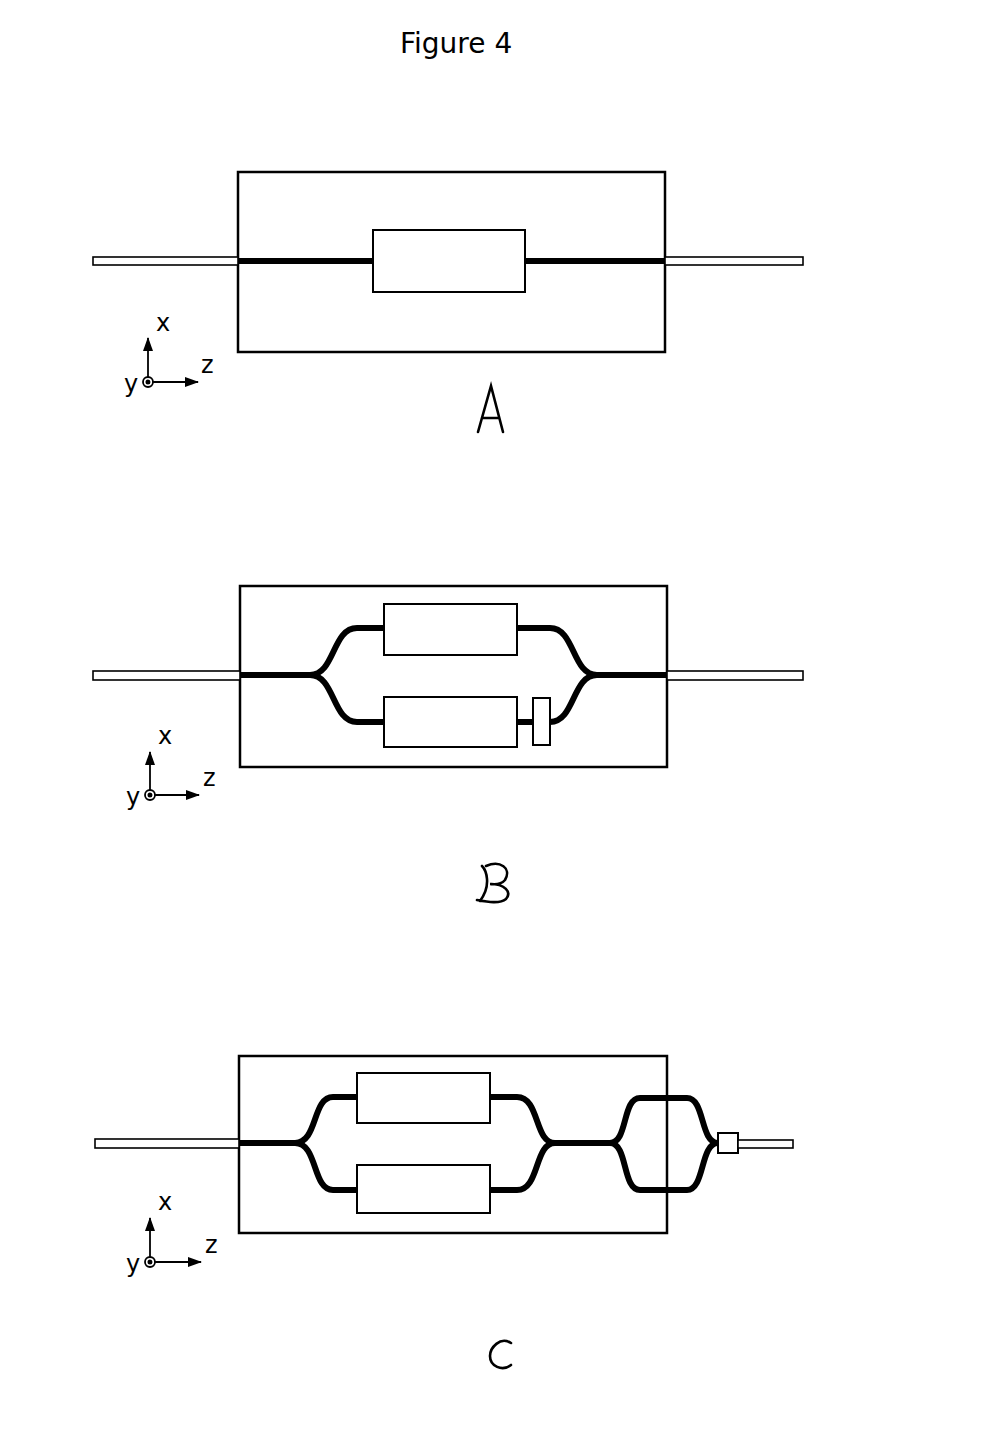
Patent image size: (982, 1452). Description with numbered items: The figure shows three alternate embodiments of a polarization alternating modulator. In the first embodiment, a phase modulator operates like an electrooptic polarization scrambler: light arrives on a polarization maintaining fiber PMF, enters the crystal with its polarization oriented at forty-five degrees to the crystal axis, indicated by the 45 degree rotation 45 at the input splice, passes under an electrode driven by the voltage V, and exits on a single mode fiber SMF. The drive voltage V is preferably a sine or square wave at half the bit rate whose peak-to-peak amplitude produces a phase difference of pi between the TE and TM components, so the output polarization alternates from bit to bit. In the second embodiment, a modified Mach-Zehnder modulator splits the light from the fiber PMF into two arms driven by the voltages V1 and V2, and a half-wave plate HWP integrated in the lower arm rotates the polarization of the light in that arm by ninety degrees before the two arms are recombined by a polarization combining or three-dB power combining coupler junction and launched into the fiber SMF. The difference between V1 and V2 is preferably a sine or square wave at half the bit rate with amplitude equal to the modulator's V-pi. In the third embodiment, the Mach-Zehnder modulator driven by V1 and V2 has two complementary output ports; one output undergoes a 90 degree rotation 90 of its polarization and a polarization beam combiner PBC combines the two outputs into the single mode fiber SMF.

In FIG. 4A, the drive voltage V is at (448, 230).
In FIG. 4B, the first arm drive voltage V1 is at (449, 604).
In FIG. 4C, the first arm drive voltage V1 is at (427, 1073).
In FIG. 4B, the second arm drive voltage V2 is at (449, 747).
In FIG. 4C, the second arm drive voltage V2 is at (427, 1213).
In FIG. 4A, the polarization maintaining fiber PMF is at (165, 242).
In FIG. 4B, the polarization maintaining fiber PMF is at (166, 656).
In FIG. 4C, the polarization maintaining fiber PMF is at (167, 1124).
In FIG. 4A, the single mode fiber SMF is at (734, 242).
In FIG. 4B, the single mode fiber SMF is at (735, 657).
In FIG. 4C, the single mode fiber SMF is at (778, 1124).
In FIG. 4B, the half-wave plate HWP is at (553, 751).
In FIG. 4C, the polarization beam combiner PBC is at (729, 1125).
In FIG. 4A, the 45 degree rotation 45 is at (236, 256).
In FIG. 4C, the 90 degree rotation 90 is at (677, 1202).